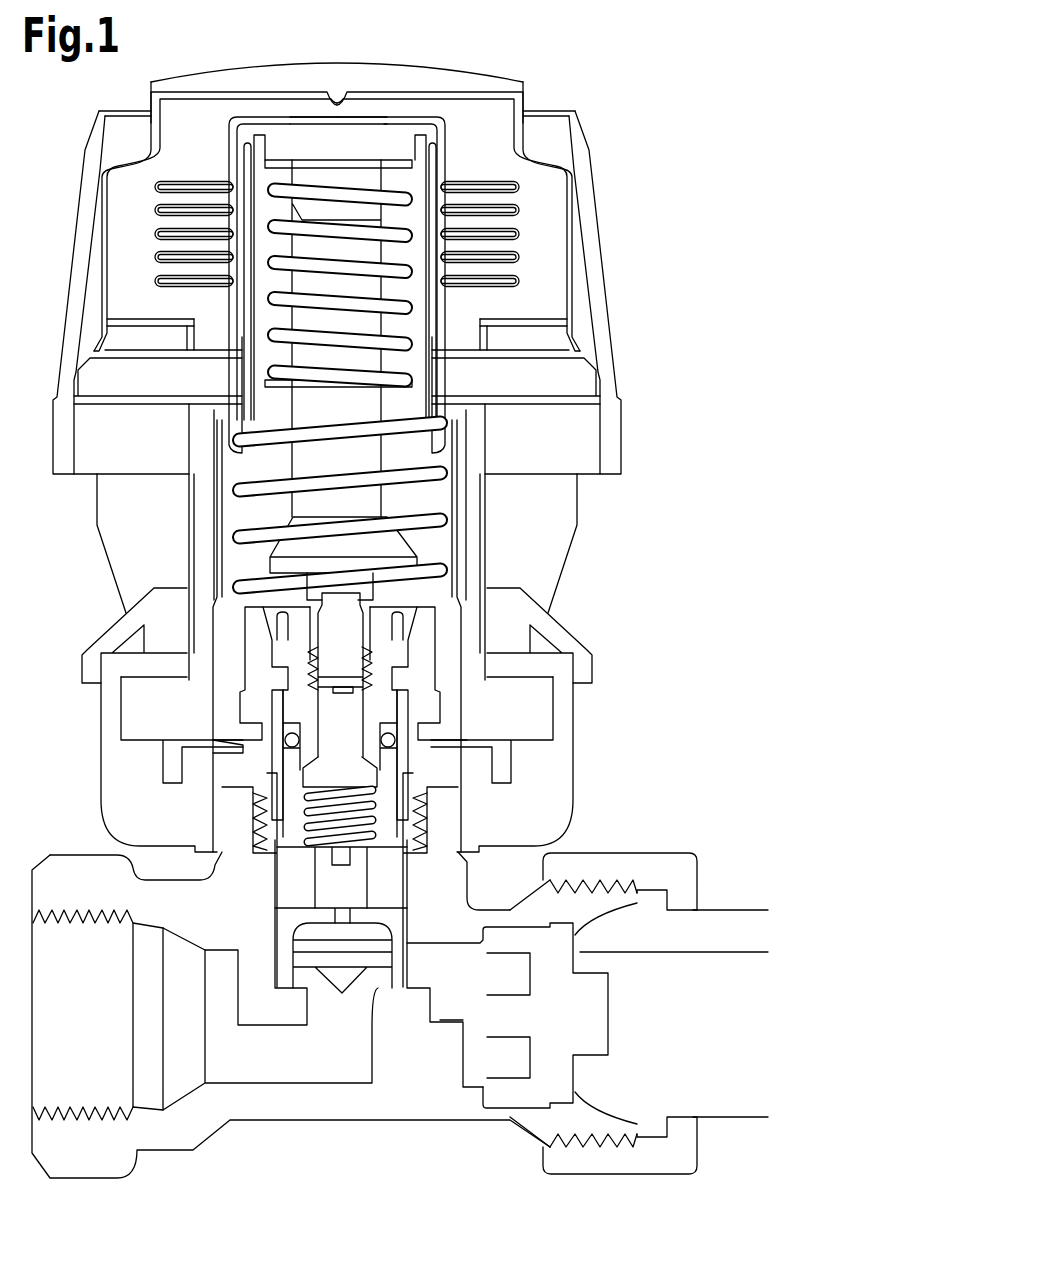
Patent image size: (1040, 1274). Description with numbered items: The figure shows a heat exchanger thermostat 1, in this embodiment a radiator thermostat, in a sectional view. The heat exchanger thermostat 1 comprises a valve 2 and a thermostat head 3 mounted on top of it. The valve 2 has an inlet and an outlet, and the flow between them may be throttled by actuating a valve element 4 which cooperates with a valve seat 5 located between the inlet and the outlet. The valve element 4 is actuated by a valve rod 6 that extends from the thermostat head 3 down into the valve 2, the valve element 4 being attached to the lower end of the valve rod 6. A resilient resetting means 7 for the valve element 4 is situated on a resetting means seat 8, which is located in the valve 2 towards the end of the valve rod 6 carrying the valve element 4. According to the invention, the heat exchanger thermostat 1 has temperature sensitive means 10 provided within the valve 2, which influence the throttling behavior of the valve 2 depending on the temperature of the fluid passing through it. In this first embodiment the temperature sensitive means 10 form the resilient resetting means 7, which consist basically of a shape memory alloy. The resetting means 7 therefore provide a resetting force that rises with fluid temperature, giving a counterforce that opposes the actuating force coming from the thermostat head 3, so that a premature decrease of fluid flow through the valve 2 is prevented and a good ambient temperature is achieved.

The heat exchanger thermostat 1 is at (683, 165).
The valve 2 is at (395, 1078).
The thermostat head 3 is at (545, 538).
The valve element 4 is at (332, 953).
The valve seat 5 is at (378, 988).
The valve rod 6 is at (363, 773).
The resilient resetting means 7 is at (377, 810).
The resetting means seat 8 is at (358, 862).
The temperature sensitive means 10 is at (340, 816).